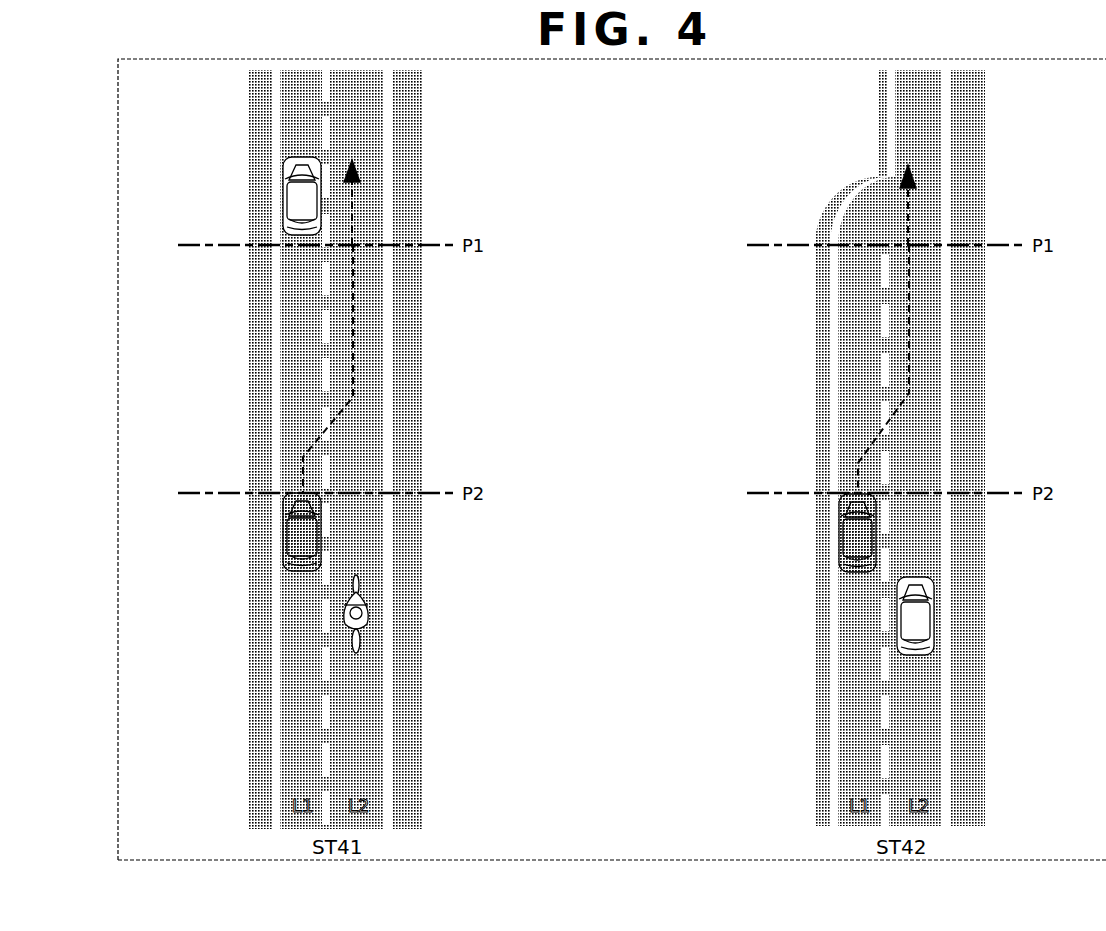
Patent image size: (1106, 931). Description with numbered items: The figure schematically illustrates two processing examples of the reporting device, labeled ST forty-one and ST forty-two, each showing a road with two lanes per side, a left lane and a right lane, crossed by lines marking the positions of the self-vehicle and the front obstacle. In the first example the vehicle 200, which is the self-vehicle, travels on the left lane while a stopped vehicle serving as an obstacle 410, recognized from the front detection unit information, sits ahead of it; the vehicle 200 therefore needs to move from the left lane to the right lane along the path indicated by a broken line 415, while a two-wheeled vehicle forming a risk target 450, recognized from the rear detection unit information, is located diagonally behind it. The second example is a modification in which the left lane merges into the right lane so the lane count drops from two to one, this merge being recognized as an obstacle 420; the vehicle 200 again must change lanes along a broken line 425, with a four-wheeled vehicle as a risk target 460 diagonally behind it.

The vehicle 200 is at (285, 537).
The obstacle 410 is at (285, 215).
The broken line 415 is at (353, 330).
The obstacle 420 is at (833, 212).
The broken line 425 is at (910, 365).
The risk target 450 is at (370, 620).
The risk target 460 is at (932, 622).